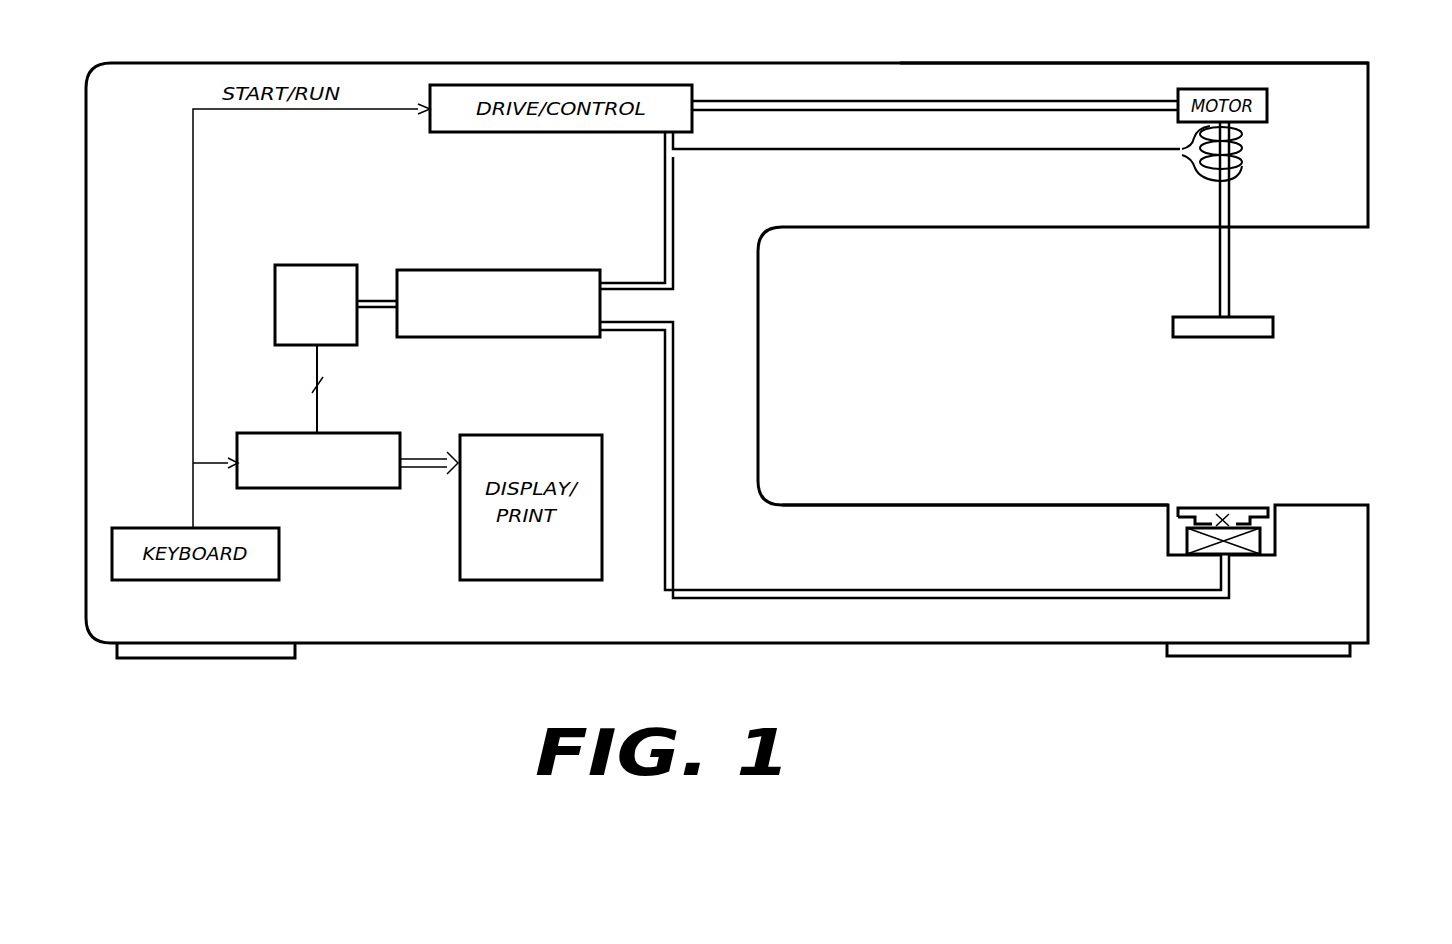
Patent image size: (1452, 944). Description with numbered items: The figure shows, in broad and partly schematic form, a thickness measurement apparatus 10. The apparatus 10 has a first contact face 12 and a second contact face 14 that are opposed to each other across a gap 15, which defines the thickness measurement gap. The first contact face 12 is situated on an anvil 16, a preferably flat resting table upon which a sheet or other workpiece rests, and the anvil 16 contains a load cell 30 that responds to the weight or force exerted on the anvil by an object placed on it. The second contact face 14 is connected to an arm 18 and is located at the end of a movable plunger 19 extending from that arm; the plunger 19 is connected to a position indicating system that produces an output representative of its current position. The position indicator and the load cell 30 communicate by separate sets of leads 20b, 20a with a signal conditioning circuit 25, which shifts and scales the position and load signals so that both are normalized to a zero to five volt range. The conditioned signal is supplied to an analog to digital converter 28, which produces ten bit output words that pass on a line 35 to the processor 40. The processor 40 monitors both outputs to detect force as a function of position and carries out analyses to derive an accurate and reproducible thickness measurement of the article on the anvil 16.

The thickness measurement apparatus 10 is at (1355, 289).
The first contact face 12 is at (1205, 505).
The second contact face 14 is at (1218, 338).
The gap 15 is at (1240, 431).
The anvil 16 is at (1232, 520).
The arm 18 is at (1062, 73).
The movable plunger 19 is at (1230, 262).
The leads 20a is at (663, 395).
The leads 20b is at (663, 203).
The signal conditioning circuit 25 is at (505, 270).
The analog to digital converter 28 is at (330, 265).
The load cell 30 is at (1258, 540).
The line 35 is at (318, 403).
The processor 40 is at (377, 433).